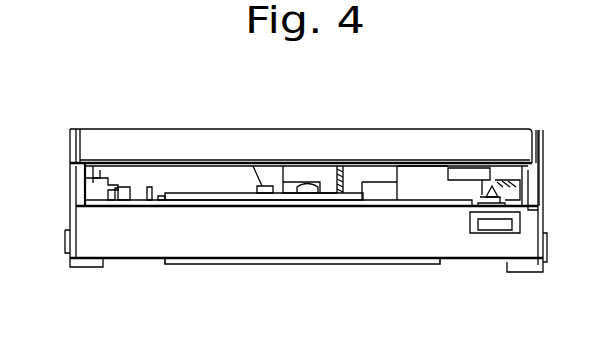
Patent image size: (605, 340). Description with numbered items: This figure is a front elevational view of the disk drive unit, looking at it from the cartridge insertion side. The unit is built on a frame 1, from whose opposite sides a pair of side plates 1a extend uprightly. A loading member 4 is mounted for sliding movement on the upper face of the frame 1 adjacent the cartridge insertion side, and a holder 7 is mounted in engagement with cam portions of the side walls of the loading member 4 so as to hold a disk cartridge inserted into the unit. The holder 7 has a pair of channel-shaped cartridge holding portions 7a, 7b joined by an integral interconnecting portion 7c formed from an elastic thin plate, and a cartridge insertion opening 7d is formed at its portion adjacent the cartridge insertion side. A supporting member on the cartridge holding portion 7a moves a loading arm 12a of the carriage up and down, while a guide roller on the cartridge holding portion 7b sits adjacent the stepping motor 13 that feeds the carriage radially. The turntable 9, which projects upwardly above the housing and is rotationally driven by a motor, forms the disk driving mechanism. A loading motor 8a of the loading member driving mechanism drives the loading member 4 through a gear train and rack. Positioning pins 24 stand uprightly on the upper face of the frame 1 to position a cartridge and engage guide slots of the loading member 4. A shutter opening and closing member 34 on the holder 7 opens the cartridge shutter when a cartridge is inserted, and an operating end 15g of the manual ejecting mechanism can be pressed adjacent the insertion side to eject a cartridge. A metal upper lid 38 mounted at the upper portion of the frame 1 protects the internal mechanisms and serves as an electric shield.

The frame 1 is at (248, 240).
The side plates 1a is at (544, 164).
The loading member 4 is at (438, 201).
The holder 7 is at (188, 166).
The cartridge holding portion 7a is at (510, 161).
The cartridge holding portion 7b is at (112, 162).
The interconnecting portion 7c is at (268, 161).
The cartridge insertion opening 7d is at (98, 172).
The loading motor 8a is at (422, 180).
The turntable 9 is at (328, 190).
The loading arm 12a is at (353, 180).
The stepping motor 13 is at (218, 180).
The operating end 15g is at (500, 231).
The positioning pin 24 is at (120, 184).
The shutter opening and closing member 34 is at (462, 168).
The upper lid 38 is at (338, 148).